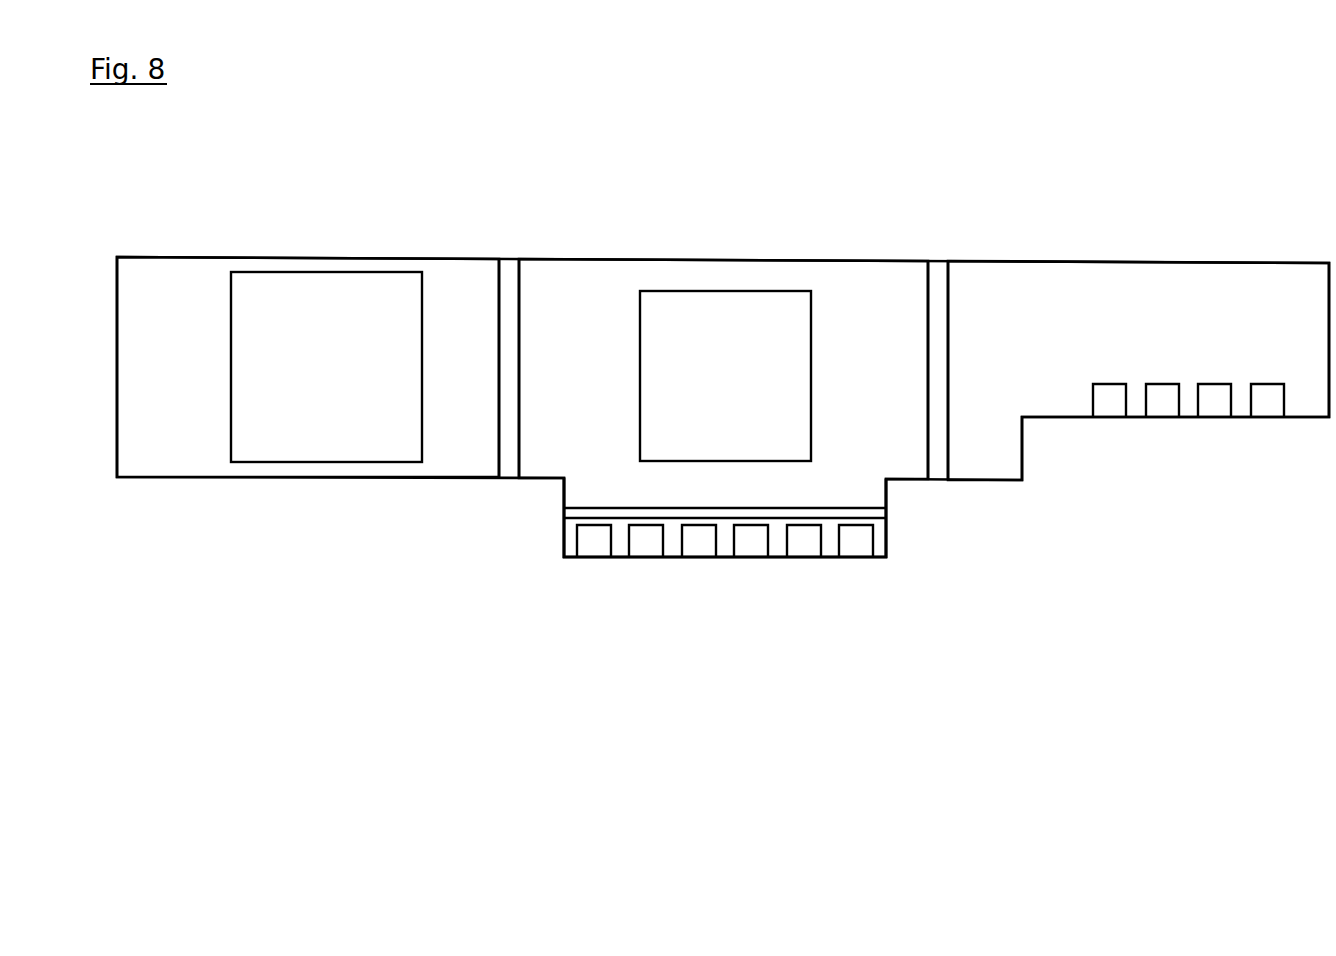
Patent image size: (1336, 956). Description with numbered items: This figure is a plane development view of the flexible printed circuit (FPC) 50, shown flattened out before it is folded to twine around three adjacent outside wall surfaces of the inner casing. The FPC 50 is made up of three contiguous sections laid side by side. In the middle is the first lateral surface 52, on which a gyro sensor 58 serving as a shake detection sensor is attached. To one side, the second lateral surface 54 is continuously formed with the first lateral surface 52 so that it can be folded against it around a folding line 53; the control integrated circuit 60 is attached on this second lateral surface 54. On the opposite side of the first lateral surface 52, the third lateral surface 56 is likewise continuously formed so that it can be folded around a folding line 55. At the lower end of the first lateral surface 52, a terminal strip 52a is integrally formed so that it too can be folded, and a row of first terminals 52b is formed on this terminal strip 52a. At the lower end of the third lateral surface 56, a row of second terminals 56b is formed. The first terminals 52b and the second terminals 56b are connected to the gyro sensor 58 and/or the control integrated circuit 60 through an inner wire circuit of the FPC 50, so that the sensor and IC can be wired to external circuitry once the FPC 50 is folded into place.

The flexible printed circuit 50 is at (855, 262).
The first lateral surface 52 is at (590, 295).
The terminal strip 52a is at (573, 538).
The first terminal 52b is at (597, 542).
The folding line 53 is at (512, 273).
The second lateral surface 54 is at (180, 292).
The folding line 55 is at (938, 275).
The third lateral surface 56 is at (1153, 297).
The second terminal 56b is at (1112, 405).
The gyro sensor 58 is at (728, 325).
The control integrated circuit 60 is at (332, 322).